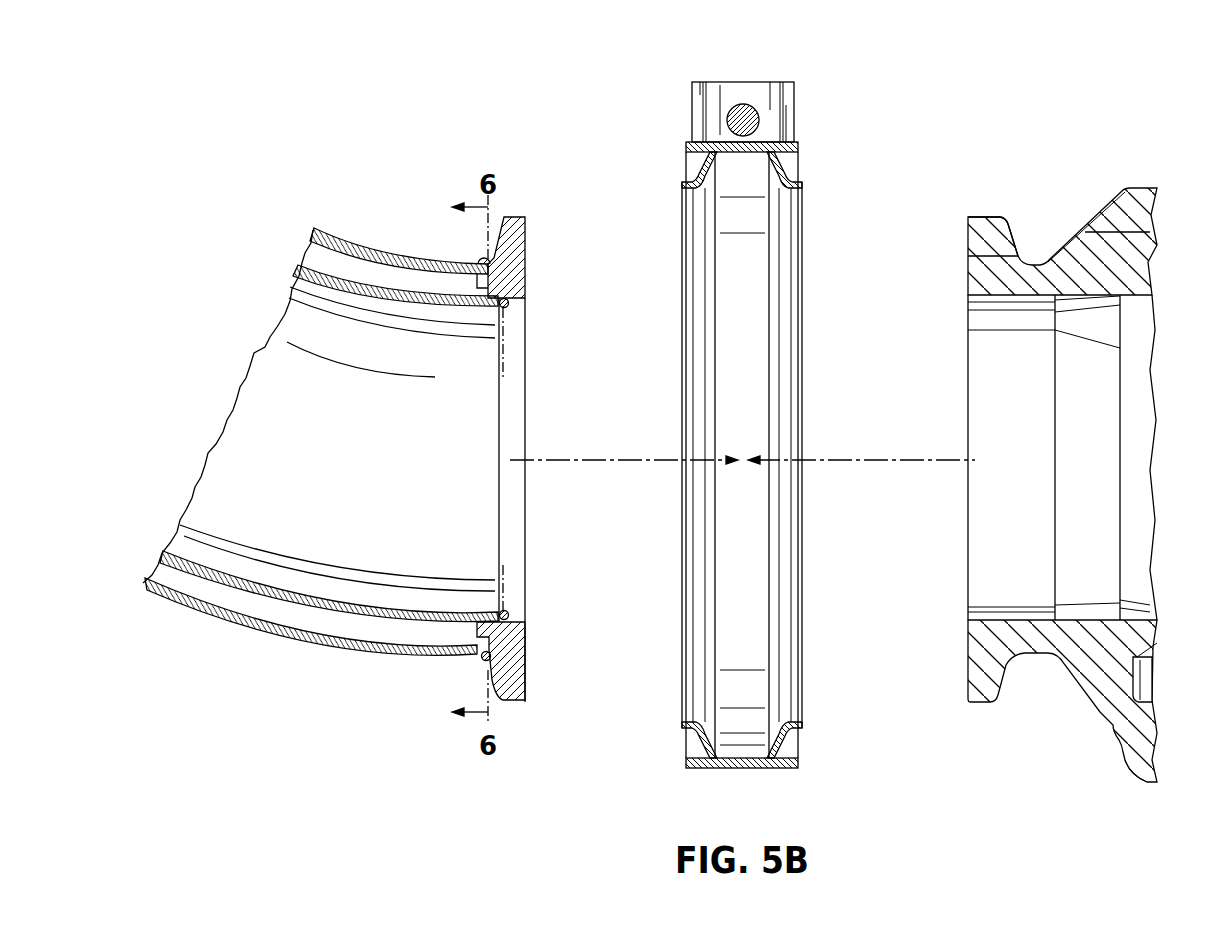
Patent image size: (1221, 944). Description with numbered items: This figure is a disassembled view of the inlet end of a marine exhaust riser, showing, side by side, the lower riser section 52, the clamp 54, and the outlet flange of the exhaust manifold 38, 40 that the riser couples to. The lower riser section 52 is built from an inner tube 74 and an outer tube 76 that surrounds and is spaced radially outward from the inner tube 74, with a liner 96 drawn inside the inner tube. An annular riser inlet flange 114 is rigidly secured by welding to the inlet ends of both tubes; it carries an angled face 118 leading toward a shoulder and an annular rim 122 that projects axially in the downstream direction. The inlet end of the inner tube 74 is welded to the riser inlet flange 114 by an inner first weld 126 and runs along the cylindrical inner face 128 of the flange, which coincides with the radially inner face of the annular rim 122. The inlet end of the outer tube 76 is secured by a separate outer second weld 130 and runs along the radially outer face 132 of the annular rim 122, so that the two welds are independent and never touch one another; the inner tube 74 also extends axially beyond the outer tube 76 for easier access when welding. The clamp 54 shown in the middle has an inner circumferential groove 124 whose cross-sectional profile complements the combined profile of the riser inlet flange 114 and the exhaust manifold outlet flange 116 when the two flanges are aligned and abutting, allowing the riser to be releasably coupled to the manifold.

The exhaust manifold 38 is at (1079, 452).
The casing wall 40 is at (1079, 452).
The lower riser section 52 is at (331, 243).
The clamp 54 is at (711, 406).
The inner tube 74 is at (262, 583).
The outer tube 76 is at (248, 627).
The inner liner wall 96 is at (372, 278).
The riser inlet flange 114 is at (516, 220).
The exhaust manifold outlet flange 116 is at (985, 225).
The angled face 118 is at (502, 690).
The annular rim 122 is at (477, 289).
The inner circumferential groove 124 is at (745, 154).
The inner first weld 126 is at (508, 306).
The cylindrical inner face 128 is at (508, 614).
The outer second weld 130 is at (481, 258).
The radially outer face 132 is at (480, 654).